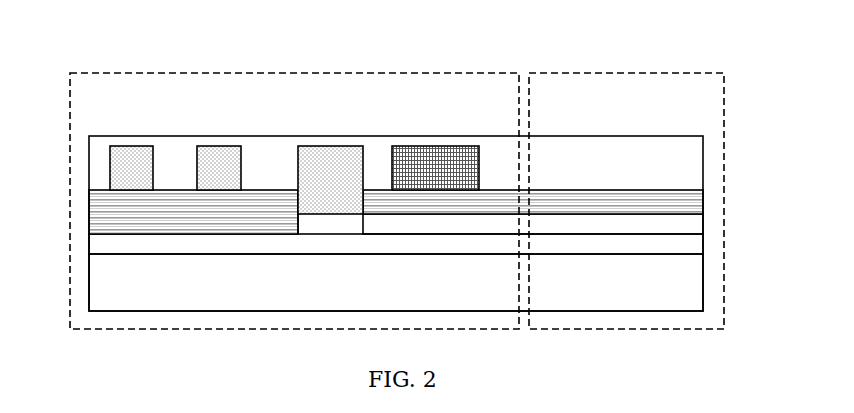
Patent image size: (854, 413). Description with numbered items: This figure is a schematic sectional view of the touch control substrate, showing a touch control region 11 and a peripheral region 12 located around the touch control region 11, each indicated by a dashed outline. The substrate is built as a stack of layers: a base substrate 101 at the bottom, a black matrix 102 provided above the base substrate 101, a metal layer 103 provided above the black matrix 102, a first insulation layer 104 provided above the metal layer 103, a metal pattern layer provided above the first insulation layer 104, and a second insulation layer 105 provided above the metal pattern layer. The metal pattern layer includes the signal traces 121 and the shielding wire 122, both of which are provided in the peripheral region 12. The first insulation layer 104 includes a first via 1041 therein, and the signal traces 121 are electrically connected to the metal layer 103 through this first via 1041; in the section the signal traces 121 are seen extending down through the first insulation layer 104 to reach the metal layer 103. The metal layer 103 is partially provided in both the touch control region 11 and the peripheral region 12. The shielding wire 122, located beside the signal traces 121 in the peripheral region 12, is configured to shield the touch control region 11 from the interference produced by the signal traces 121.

The touch control region 11 is at (583, 73).
The peripheral region 12 is at (122, 73).
The base substrate 101 is at (680, 275).
The black matrix 102 is at (673, 239).
The metal layer 103 is at (652, 225).
The first insulation layer 104 is at (123, 218).
The first via 1041 is at (297, 195).
The second insulation layer 105 is at (96, 153).
The signal traces 121 is at (330, 182).
The shielding wire 122 is at (435, 168).